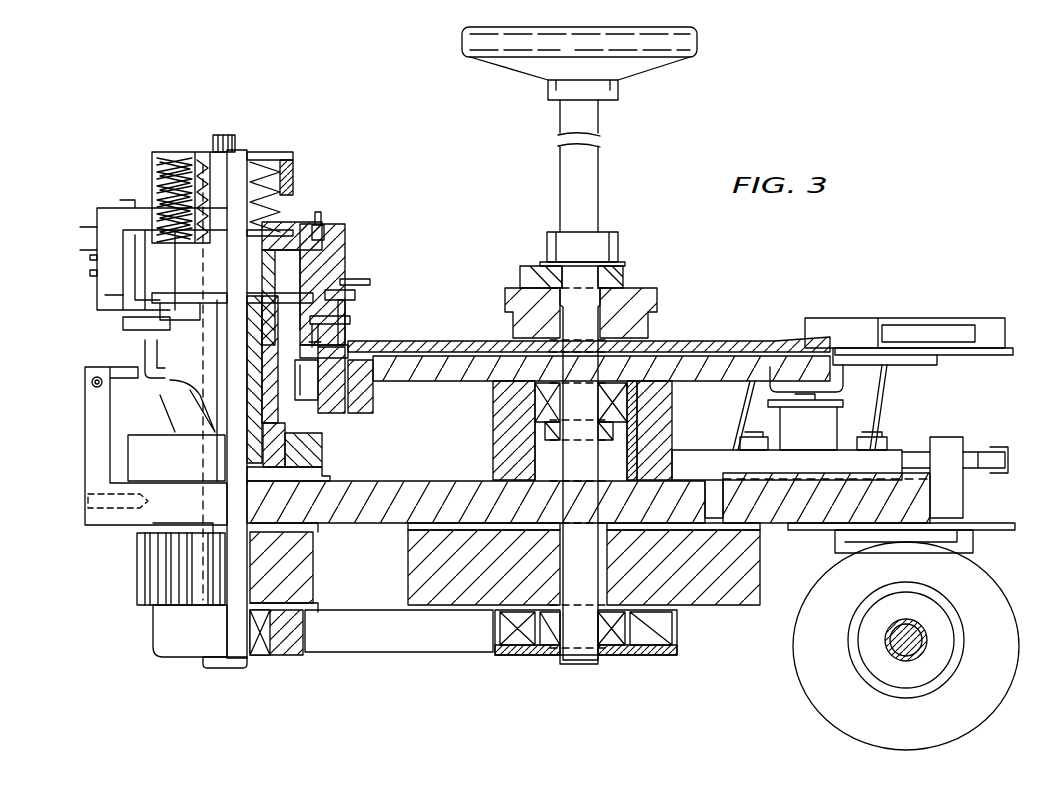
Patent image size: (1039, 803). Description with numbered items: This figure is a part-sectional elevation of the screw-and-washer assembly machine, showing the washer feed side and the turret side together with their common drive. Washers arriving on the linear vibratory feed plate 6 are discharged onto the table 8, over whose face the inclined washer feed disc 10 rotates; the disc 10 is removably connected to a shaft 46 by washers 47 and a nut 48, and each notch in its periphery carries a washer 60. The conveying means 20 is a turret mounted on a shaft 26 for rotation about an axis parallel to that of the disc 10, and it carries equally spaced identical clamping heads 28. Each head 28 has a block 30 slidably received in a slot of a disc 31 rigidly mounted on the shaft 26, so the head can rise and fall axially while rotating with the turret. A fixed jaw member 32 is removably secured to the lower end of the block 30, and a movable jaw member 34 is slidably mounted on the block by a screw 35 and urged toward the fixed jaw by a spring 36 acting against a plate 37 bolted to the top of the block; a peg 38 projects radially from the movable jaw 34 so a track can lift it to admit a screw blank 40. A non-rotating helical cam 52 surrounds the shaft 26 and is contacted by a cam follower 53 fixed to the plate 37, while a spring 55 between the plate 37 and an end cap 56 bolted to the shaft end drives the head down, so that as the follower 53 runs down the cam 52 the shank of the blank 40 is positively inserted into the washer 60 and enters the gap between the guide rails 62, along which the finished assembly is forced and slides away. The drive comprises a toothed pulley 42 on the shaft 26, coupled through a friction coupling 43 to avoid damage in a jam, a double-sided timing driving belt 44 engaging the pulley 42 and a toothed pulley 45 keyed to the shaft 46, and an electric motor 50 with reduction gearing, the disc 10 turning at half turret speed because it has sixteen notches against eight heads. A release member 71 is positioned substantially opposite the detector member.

The linear vibratory feed plate 6 is at (831, 330).
The table 8 is at (720, 378).
The washer feed disc 10 is at (702, 343).
The conveying means (turret) 20 is at (118, 188).
The turret shaft 26 is at (236, 665).
The clamping head 28 is at (112, 227).
The block 30 is at (324, 236).
The disc 31 is at (170, 290).
The fixed jaw member 32 is at (298, 362).
The movable jaw member 34 is at (357, 318).
The screw 35 is at (364, 296).
The spring 36 is at (347, 245).
The plate 37 is at (298, 226).
The peg 38 is at (364, 281).
The screw blank 40 is at (347, 340).
The toothed pulley 42 is at (300, 568).
The friction coupling 43 is at (288, 657).
The driving belt 44 is at (150, 566).
The toothed pulley 45 is at (733, 606).
The shaft 46 is at (598, 662).
The washers 47 is at (650, 306).
The nut 48 is at (603, 245).
The electric motor 50 is at (800, 645).
The helical cam 52 is at (170, 415).
The cam follower 53 is at (292, 420).
The spring 55 is at (283, 168).
The end cap 56 is at (237, 152).
The washer 60 is at (352, 347).
The guide rails 62 is at (368, 414).
The release member 71 is at (122, 375).